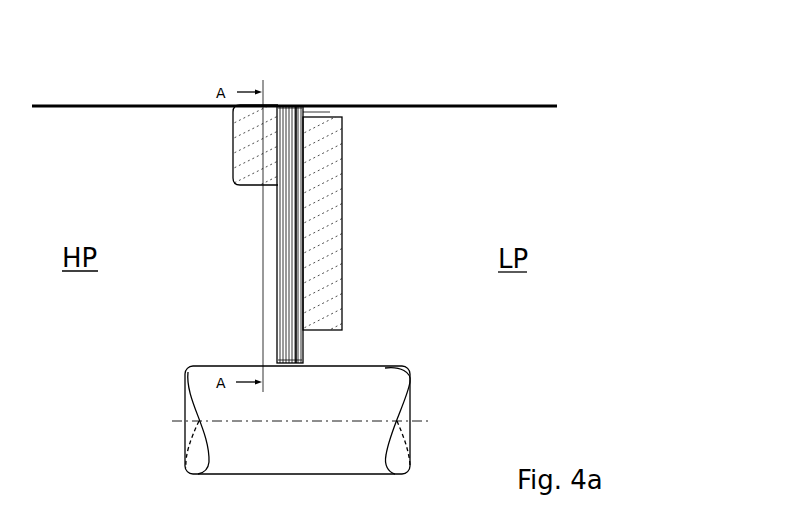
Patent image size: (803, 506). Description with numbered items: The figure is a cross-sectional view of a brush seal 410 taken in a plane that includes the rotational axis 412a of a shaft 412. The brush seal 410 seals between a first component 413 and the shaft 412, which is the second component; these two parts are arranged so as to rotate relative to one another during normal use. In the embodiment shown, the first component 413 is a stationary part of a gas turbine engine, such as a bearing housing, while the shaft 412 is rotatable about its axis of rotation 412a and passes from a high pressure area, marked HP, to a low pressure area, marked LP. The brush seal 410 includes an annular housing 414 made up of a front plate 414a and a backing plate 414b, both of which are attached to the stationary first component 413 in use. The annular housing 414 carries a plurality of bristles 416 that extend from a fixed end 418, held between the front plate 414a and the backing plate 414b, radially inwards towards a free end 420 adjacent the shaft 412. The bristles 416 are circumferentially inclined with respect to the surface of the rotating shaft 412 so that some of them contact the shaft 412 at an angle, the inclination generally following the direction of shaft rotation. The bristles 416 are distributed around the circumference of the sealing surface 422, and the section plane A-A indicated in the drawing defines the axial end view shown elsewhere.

The brush seal 410 is at (399, 60).
The shaft 412 is at (305, 461).
The rotational axis 412a is at (177, 421).
The first component 413 is at (170, 61).
The annular housing 414 is at (222, 150).
The front plate 414a is at (245, 177).
The backing plate 414b is at (322, 265).
The bristles 416 is at (283, 300).
The fixed end 418 is at (291, 127).
The free end 420 is at (305, 348).
The sealing surface 422 is at (320, 113).